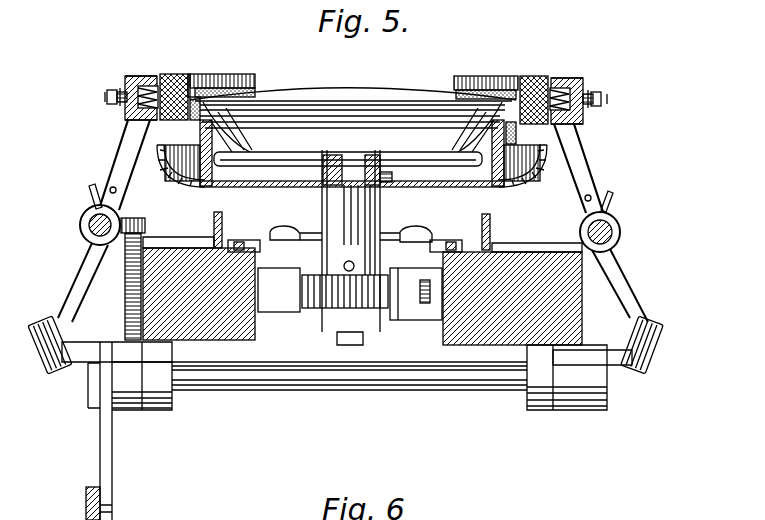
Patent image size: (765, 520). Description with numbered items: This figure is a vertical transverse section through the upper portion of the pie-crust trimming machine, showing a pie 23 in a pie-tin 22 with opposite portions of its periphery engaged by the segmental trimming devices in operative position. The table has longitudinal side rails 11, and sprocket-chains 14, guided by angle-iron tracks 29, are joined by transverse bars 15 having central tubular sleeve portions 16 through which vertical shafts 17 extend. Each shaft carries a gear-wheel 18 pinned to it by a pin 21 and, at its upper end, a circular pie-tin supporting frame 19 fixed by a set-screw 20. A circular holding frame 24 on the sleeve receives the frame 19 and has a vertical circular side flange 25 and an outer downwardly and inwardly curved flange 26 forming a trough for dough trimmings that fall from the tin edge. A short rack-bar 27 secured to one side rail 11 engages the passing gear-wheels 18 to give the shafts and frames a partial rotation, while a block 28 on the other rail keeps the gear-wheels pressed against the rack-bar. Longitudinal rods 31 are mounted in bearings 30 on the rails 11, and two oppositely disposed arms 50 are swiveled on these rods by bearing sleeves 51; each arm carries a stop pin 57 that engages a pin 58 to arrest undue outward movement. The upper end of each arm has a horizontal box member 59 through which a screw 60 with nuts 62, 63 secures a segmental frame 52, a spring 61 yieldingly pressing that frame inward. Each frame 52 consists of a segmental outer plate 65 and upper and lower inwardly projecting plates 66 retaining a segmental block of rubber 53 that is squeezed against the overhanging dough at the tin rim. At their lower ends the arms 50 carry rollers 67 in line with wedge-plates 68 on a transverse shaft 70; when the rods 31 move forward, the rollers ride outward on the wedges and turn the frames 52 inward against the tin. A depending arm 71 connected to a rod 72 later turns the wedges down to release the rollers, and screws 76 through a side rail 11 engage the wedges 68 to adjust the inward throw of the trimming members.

The longitudinal side rails 11 is at (222, 336).
The sprocket-chains 14 is at (236, 240).
The transverse bars 15 is at (286, 226).
The tubular sleeve portions 16 is at (330, 214).
The vertical shafts 17 is at (350, 170).
The gear-wheels 18 is at (312, 308).
The circular pie-tin supporting frames 19 is at (388, 168).
The set-screws 20 is at (394, 177).
The pins 21 is at (349, 260).
The pie-tin 22 is at (352, 127).
The pie 23 is at (362, 92).
The circular holding frames 24 is at (445, 187).
The vertical circular side flange 25 is at (521, 136).
The downwardly and inwardly curved flange 26 is at (522, 185).
The rack-bar 27 is at (402, 318).
The block 28 is at (279, 290).
The angle-iron tracks 29 is at (214, 230).
The bearings 30 is at (580, 244).
The longitudinal rods 31 is at (88, 222).
The arms 50 is at (116, 162).
The bearing sleeves 51 is at (80, 236).
The segmental frames 52 is at (512, 72).
The segmental blocks of rubber 53 is at (262, 80).
The stop pin 57 is at (117, 190).
The pin 58 is at (90, 194).
The horizontal box members 59 is at (125, 84).
The screws 60 is at (107, 95).
The spring 61 is at (148, 76).
The nut 62 is at (110, 102).
The nut 63 is at (120, 108).
The segmental outer plate 65 is at (160, 76).
The inwardly projecting plates 66 is at (196, 74).
The rollers 67 is at (38, 345).
The wedge-plates 68 is at (88, 362).
The transverse shaft 70 is at (404, 378).
The depending arm 71 is at (114, 474).
The bar or rod 72 is at (86, 500).
The screws 76 is at (142, 226).